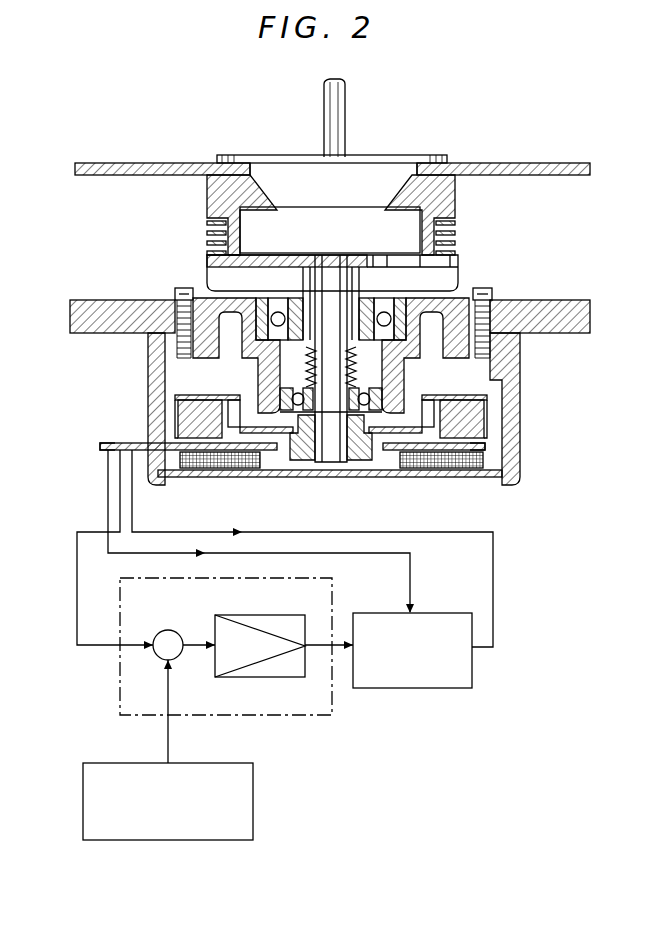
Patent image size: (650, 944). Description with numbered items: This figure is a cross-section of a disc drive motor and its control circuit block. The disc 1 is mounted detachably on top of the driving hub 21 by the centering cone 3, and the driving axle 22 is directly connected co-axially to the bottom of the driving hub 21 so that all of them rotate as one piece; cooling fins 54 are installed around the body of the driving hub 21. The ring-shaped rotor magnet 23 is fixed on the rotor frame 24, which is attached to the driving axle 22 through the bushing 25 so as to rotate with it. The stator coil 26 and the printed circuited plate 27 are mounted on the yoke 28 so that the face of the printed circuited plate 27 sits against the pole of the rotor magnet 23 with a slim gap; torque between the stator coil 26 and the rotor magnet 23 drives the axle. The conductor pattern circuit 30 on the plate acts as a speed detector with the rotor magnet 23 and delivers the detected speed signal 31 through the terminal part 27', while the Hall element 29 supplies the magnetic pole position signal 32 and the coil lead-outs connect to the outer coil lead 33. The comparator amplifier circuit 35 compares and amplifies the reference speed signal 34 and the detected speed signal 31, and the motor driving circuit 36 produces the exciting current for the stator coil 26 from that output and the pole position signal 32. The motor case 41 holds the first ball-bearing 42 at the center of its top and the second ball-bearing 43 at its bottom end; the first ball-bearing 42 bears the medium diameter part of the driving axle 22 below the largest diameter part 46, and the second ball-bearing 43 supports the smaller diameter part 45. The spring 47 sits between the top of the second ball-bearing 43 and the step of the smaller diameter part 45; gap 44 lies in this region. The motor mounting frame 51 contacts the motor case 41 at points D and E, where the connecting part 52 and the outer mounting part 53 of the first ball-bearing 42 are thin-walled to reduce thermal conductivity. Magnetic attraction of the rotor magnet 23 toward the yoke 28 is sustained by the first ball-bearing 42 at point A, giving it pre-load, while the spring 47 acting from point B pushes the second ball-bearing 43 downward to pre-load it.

The disc 1 is at (527, 170).
The centering cone 3 is at (383, 157).
The driving hub 21 is at (443, 197).
The driving axle 22 is at (330, 452).
The rotor magnet 23 is at (483, 423).
The rotor frame 24 is at (487, 397).
The bushing 25 is at (358, 443).
The stator coil 26 is at (463, 477).
The printed circuited plate 27 is at (515, 440).
The terminal part 27' is at (87, 429).
The yoke 28 is at (427, 468).
The Hall element 29 is at (207, 478).
The conductor pattern circuit 30 is at (165, 445).
The detected speed signal 31 is at (77, 590).
The magnetic pole position signal 32 is at (410, 575).
The outer coil lead 33 is at (348, 533).
The reference speed signal 34 is at (245, 763).
The comparator amplifier circuit 35 is at (332, 598).
The motor driving circuit 36 is at (410, 688).
The motor case 41 is at (148, 350).
The first ball-bearing 42 is at (207, 261).
The second ball-bearing 43 is at (290, 413).
The spring 44 is at (327, 297).
The smaller diameter part 45 is at (350, 355).
The largest diameter part 46 is at (337, 292).
The spring 47 is at (262, 373).
The motor mounting frame 51 is at (93, 300).
The connecting part 52 is at (462, 297).
The outer mounting part 53 is at (430, 293).
The cooling fins 54 is at (455, 224).
The point A is at (372, 288).
The point B is at (310, 292).
The point D is at (152, 322).
The point E is at (188, 318).